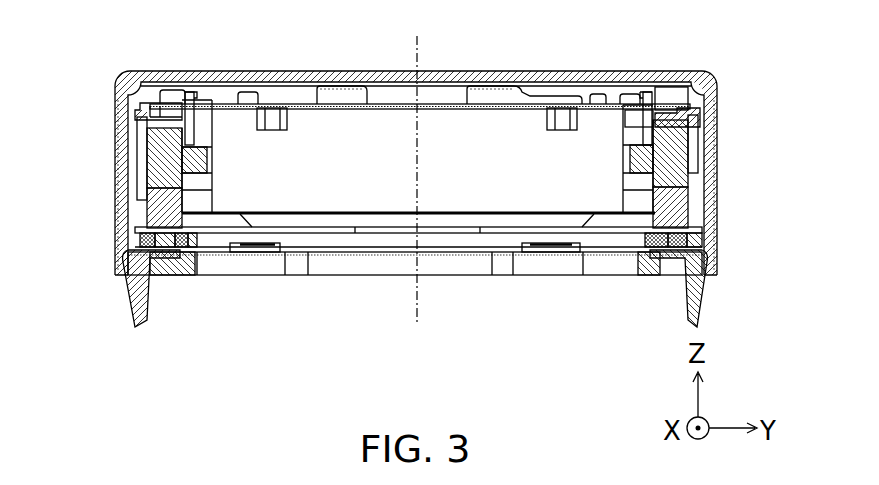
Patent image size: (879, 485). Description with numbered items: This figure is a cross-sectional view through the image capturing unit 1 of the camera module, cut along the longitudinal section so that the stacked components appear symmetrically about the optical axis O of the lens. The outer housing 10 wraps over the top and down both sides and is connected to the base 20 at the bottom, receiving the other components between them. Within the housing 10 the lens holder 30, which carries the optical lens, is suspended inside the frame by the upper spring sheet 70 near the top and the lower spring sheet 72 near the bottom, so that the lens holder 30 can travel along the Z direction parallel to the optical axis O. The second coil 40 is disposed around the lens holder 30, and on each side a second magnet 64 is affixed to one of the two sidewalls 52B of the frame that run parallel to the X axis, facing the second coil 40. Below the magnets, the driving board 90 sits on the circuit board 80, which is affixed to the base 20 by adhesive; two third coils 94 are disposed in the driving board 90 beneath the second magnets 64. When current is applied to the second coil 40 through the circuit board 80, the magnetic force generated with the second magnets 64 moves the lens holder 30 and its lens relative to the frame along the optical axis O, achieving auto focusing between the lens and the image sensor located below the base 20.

The image capturing unit 1 is at (87, 31).
The housing 10 is at (718, 88).
The base 20 is at (643, 278).
The lens holder 30 is at (316, 145).
The second coil 40 is at (160, 158).
The sidewall of the frame 52B is at (140, 118).
The second magnet 64 is at (165, 205).
The upper spring sheet 70 is at (592, 122).
The lower spring sheet 72 is at (608, 216).
The circuit board 80 is at (702, 262).
The driving board 90 is at (692, 240).
The third coil 94 is at (176, 260).
The optical axis O is at (417, 164).